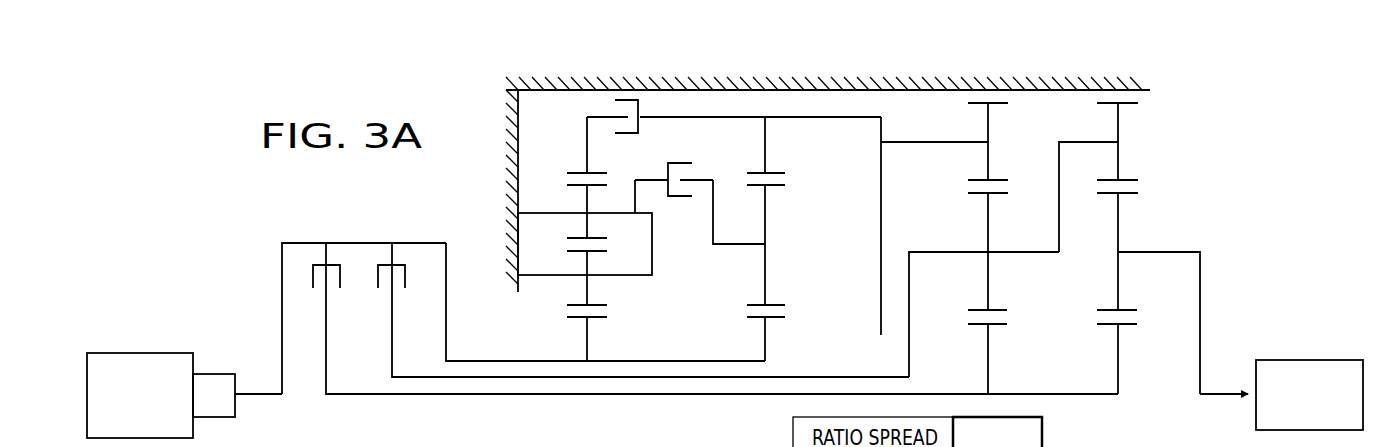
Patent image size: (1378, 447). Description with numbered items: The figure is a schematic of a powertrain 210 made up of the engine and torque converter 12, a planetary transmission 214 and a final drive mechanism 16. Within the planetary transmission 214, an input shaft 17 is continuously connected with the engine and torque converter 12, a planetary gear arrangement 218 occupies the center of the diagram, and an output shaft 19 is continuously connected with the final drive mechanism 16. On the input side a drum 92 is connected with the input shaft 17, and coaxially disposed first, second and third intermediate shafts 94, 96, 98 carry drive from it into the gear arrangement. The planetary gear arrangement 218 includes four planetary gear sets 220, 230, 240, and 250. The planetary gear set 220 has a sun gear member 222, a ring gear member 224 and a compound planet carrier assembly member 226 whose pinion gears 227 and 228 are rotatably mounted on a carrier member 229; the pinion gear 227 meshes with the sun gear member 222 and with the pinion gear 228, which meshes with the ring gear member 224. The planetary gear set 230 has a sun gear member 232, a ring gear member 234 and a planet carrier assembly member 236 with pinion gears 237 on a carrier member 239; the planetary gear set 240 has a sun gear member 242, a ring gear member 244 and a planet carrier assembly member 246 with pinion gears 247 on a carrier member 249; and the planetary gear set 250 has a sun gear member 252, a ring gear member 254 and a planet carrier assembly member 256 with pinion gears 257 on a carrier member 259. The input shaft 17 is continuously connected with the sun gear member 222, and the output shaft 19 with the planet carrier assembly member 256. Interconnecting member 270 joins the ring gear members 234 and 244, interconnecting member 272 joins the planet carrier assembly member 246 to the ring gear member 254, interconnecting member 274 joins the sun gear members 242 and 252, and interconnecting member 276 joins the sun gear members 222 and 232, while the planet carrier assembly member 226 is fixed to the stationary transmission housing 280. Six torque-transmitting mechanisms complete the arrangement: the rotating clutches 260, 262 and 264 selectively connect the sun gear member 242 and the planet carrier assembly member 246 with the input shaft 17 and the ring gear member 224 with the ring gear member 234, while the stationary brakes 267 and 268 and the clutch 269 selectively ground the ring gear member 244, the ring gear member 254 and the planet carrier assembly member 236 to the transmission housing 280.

The engine and torque converter 12 is at (158, 333).
The final drive mechanism 16 is at (1295, 345).
The input shaft 17 is at (263, 396).
The output shaft 19 is at (1208, 397).
The drum 92 is at (300, 240).
The first intermediate shaft 94 is at (476, 362).
The second intermediate shaft 96 is at (522, 378).
The third intermediate shaft 98 is at (565, 395).
The powertrain 210 is at (478, 106).
The planetary transmission 214 is at (685, 70).
The planetary gear arrangement 218 is at (1035, 72).
The planetary gear set 220 is at (598, 325).
The sun gear member 222 is at (575, 320).
The ring gear member 224 is at (577, 170).
The planet carrier assembly member 226 is at (640, 295).
The pinion gear 227 is at (585, 286).
The pinion gear 228 is at (585, 208).
The carrier member 229 is at (636, 200).
The planetary gear set 230 is at (778, 325).
The sun gear member 232 is at (752, 320).
The ring gear member 234 is at (752, 170).
The planet carrier assembly member 236 is at (800, 265).
The pinion gears 237 is at (762, 283).
The carrier member 239 is at (735, 246).
The planetary gear set 240 is at (1000, 332).
The sun gear member 242 is at (977, 327).
The ring gear member 244 is at (1000, 106).
The planet carrier assembly member 246 is at (950, 268).
The pinion gears 247 is at (990, 233).
The carrier member 249 is at (955, 250).
The planetary gear set 250 is at (1133, 333).
The sun gear member 252 is at (1107, 327).
The ring gear member 254 is at (1135, 178).
The planet carrier assembly member 256 is at (1160, 270).
The pinion gears 257 is at (1125, 240).
The carrier member 259 is at (1178, 250).
The clutch 260 is at (317, 297).
The clutch 262 is at (383, 297).
The clutch 264 is at (607, 107).
The brake 267 is at (963, 97).
The brake 268 is at (1150, 97).
The clutch 269 is at (655, 163).
The interconnecting member 270 is at (830, 117).
The interconnecting member 272 is at (1080, 142).
The interconnecting member 274 is at (1088, 394).
The interconnecting member 276 is at (718, 362).
The transmission housing 280 is at (508, 205).